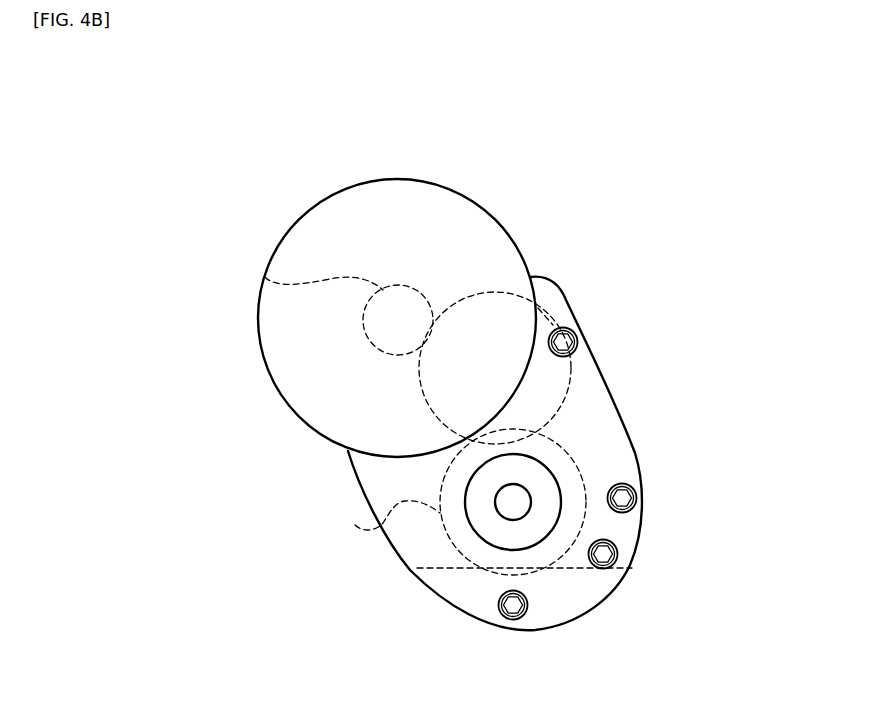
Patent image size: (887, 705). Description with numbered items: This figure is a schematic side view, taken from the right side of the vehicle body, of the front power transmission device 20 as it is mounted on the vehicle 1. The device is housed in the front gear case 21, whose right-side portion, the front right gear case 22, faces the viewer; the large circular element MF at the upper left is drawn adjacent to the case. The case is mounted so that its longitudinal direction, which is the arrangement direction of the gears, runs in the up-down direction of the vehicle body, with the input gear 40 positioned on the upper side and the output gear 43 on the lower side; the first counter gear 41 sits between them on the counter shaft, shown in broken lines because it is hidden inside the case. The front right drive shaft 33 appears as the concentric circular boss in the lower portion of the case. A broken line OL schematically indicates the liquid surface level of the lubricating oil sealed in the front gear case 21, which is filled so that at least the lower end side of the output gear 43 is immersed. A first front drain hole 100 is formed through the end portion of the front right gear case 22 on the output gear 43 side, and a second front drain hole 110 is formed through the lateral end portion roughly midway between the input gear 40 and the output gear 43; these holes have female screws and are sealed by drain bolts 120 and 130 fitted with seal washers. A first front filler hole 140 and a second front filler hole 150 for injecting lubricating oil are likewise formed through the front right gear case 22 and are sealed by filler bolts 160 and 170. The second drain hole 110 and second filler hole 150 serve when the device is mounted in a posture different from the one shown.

The vehicle 1 is at (444, 97).
The front power transmission device 20 is at (381, 151).
The motor frame MF is at (463, 222).
The input gear 40 is at (265, 277).
The first counter gear 41 is at (508, 293).
The front gear case 21 is at (591, 281).
The front right gear case 22 is at (603, 412).
The front right drive shaft 33 is at (513, 502).
The output gear 43 is at (355, 527).
The liquid surface level of lubricating oil OL is at (502, 574).
The first front drain hole 100 is at (517, 617).
The second front drain hole 110 is at (580, 339).
The drain bolt 120 is at (518, 625).
The drain bolt 130 is at (578, 322).
The first front filler hole 140 is at (607, 554).
The second front filler hole 150 is at (636, 486).
The filler bolt 160 is at (625, 545).
The filler bolt 170 is at (638, 481).